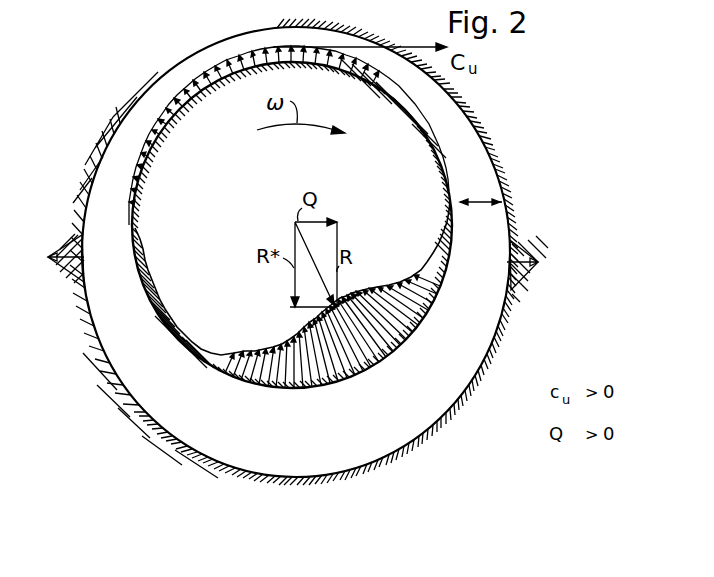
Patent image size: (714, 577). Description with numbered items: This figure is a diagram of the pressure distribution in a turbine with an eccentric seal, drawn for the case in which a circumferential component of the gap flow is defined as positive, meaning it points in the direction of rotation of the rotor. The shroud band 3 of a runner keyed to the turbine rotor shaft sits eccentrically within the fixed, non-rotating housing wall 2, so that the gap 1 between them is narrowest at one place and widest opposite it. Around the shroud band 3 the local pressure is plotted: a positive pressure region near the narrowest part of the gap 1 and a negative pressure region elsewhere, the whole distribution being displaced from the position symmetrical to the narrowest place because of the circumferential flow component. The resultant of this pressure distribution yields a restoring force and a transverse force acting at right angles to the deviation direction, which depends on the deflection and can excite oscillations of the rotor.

The gap 1 is at (490, 202).
The housing wall 2 is at (420, 437).
The shroud band 3 is at (318, 390).